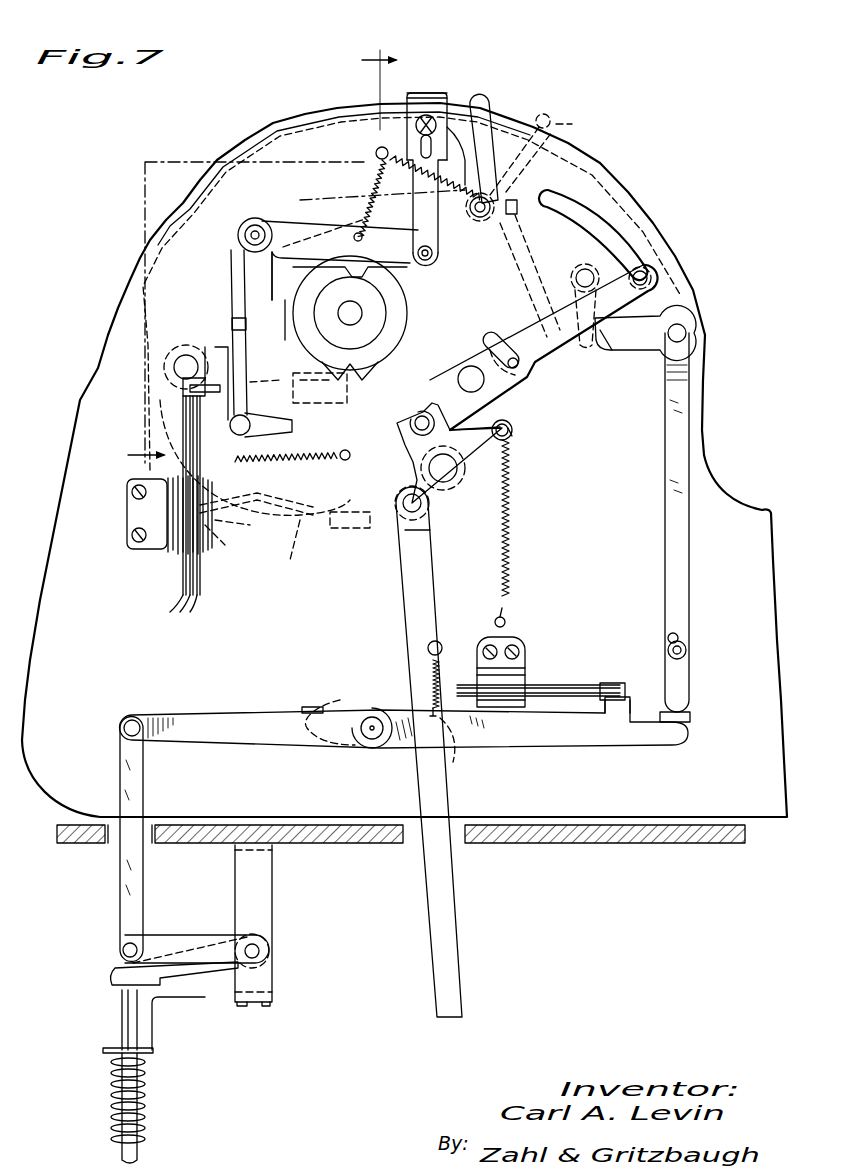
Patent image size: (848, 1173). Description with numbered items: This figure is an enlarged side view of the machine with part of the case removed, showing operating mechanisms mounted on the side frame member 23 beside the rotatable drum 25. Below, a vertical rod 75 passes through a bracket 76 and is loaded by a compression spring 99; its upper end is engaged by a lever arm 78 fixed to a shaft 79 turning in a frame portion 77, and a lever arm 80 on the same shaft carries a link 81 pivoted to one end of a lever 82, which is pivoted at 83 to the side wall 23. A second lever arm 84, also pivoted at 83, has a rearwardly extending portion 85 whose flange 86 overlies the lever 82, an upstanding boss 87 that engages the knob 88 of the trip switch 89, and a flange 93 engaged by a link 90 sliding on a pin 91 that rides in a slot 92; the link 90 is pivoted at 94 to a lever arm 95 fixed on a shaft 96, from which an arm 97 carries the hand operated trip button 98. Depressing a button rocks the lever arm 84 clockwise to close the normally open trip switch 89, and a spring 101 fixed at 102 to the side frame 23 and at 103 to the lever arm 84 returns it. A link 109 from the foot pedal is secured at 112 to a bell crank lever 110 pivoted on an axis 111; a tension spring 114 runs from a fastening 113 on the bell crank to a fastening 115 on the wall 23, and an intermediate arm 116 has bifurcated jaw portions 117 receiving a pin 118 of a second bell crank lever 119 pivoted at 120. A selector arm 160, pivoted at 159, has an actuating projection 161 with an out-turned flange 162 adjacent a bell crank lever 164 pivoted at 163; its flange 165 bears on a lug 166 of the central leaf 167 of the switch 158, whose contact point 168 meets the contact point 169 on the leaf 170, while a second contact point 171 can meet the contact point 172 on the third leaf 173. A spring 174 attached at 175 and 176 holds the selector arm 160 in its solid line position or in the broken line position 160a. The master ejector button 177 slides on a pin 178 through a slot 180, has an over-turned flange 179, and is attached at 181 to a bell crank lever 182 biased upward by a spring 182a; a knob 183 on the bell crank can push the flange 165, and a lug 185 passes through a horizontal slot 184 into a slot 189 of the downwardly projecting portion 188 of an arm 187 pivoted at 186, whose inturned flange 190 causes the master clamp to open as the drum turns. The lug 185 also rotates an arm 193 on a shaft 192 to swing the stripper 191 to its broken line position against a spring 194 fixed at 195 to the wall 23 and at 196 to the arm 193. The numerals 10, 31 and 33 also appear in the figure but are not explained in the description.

The section line 10 is at (246, 259).
The side frame member 23 is at (380, 594).
The rotatable drum 25 is at (262, 142).
The eccentric cam disc 31 is at (360, 312).
The base plate 33 is at (636, 846).
The vertical rod 75 is at (142, 1152).
The bracket 76 is at (158, 1048).
The frame portion 77 is at (272, 900).
The lever arm 78 is at (190, 975).
The shaft 79 is at (262, 951).
The lever arm 80 is at (170, 938).
The link 81 is at (135, 792).
The lever 82 is at (270, 748).
The pivot 83 is at (390, 705).
The second lever arm 84 is at (548, 745).
The rearwardly extending portion 85 is at (343, 705).
The horizontally extending flange 86 is at (320, 707).
The upstanding boss 87 is at (612, 706).
The lug or knob 88 is at (620, 683).
The trip switch 89 is at (525, 648).
The link 90 is at (692, 566).
The pin 91 is at (688, 648).
The slot 92 is at (679, 634).
The horizontally disposed flange 93 is at (693, 716).
The pivot 94 is at (688, 333).
The lever arm 95 is at (655, 355).
The horizontally disposed shaft 96 is at (574, 282).
The arm 97 is at (560, 297).
The hand operated trip button 98 is at (587, 335).
The compression spring 99 is at (146, 1108).
The spring 101 is at (441, 662).
The spring fastening 102 is at (440, 642).
The spring fastening 103 is at (464, 751).
The link 109 is at (458, 940).
The bell crank lever 110 is at (436, 520).
The pivot axis 111 is at (450, 482).
The attachment point 112 is at (402, 502).
The spring fastening 113 is at (512, 436).
The tension spring 114 is at (510, 490).
The spring fastening 115 is at (505, 618).
The intermediate arm 116 is at (501, 427).
The bifurcated jaw portions 117 is at (399, 433).
The pin 118 is at (412, 413).
The bell crank lever 119 is at (447, 368).
The pivot pin 120 is at (461, 374).
The switch 158 is at (125, 567).
The pivot 159 is at (525, 190).
The selector arm 160 is at (500, 120).
The broken line position of selector arm 160a is at (556, 154).
The actuating projection 161 is at (450, 125).
The out-turned flange 162 is at (476, 215).
The pivot 163 is at (250, 230).
The bell crank lever 164 is at (312, 215).
The out-turned flange 165 is at (215, 347).
The knob or lug 166 is at (190, 389).
The central leaf 167 is at (197, 435).
The contact point 168 is at (176, 396).
The contact point 169 is at (182, 405).
The leaf 170 is at (178, 468).
The second contact point 171 is at (319, 385).
The contact point 172 is at (279, 385).
The third leaf 173 is at (190, 420).
The spring 174 is at (381, 157).
The spring fastening 175 is at (514, 233).
The spring fastening 176 is at (375, 153).
The master ejector button 177 is at (440, 89).
The pin 178 is at (432, 142).
The over-turned flange 179 is at (413, 91).
The vertical slot 180 is at (464, 146).
The pivot 181 is at (434, 253).
The bell crank lever 182 is at (278, 222).
The spring 182a is at (283, 125).
The switch actuating knob 183 is at (236, 325).
The horizontal slot 184 is at (294, 420).
The lug 185 is at (262, 430).
The pivot 186 is at (173, 368).
The arm 187 is at (304, 331).
The downwardly projecting portion 188 is at (285, 504).
The slot 189 is at (256, 495).
The inturned flange portion 190 is at (350, 390).
The stripper 191 is at (301, 542).
The shaft 192 is at (228, 543).
The arm 193 is at (244, 530).
The spring 194 is at (320, 464).
The spring fastening 195 is at (347, 450).
The spring fastening 196 is at (255, 457).